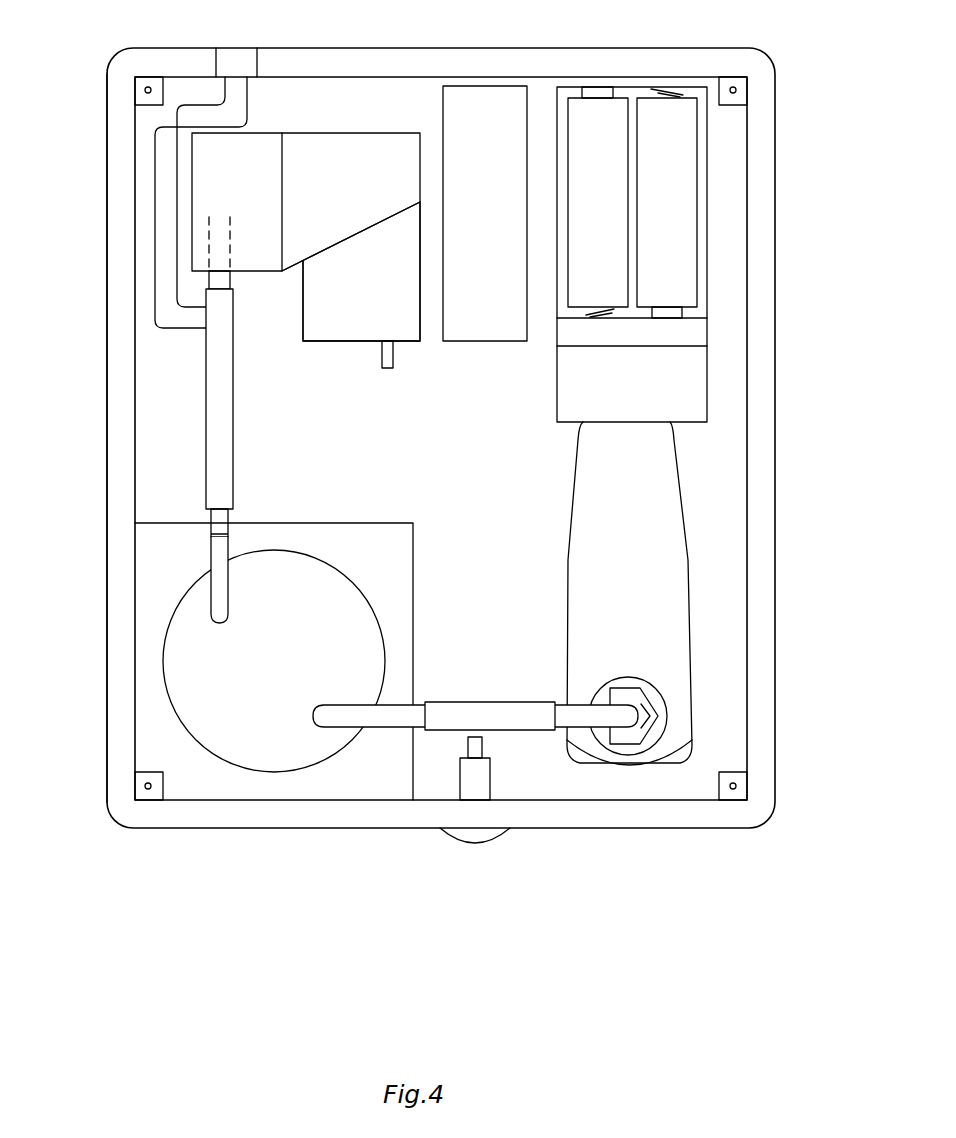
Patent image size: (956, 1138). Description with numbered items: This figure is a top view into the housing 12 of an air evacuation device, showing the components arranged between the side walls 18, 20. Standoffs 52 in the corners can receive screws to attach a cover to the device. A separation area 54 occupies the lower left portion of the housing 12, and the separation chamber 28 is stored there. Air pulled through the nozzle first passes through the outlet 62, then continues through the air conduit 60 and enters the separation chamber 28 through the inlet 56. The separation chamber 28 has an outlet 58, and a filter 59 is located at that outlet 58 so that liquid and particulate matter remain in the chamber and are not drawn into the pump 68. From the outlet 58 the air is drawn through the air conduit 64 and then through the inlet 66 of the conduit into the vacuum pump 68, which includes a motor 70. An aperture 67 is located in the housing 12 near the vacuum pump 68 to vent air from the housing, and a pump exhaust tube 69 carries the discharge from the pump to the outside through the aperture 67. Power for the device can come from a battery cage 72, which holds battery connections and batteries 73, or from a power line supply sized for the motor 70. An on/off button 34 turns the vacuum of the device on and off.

The housing 12 is at (775, 397).
The side wall 18 is at (107, 455).
The side wall 20 is at (775, 541).
The separation chamber 28 is at (330, 575).
The on/off button 34 is at (495, 841).
The standoffs 52 is at (140, 85).
The separation area 54 is at (157, 592).
The inlet 56 is at (410, 718).
The outlet 58 is at (218, 550).
The filter 59 is at (222, 520).
The air conduit 60 is at (497, 702).
The outlet 62 is at (625, 713).
The air conduit 64 is at (233, 463).
The inlet 66 is at (233, 280).
The aperture 67 is at (237, 48).
The vacuum pump 68 is at (350, 133).
The pump exhaust tube 69 is at (158, 203).
The motor 70 is at (336, 341).
The battery cage 72 is at (633, 88).
The batteries 73 is at (597, 182).